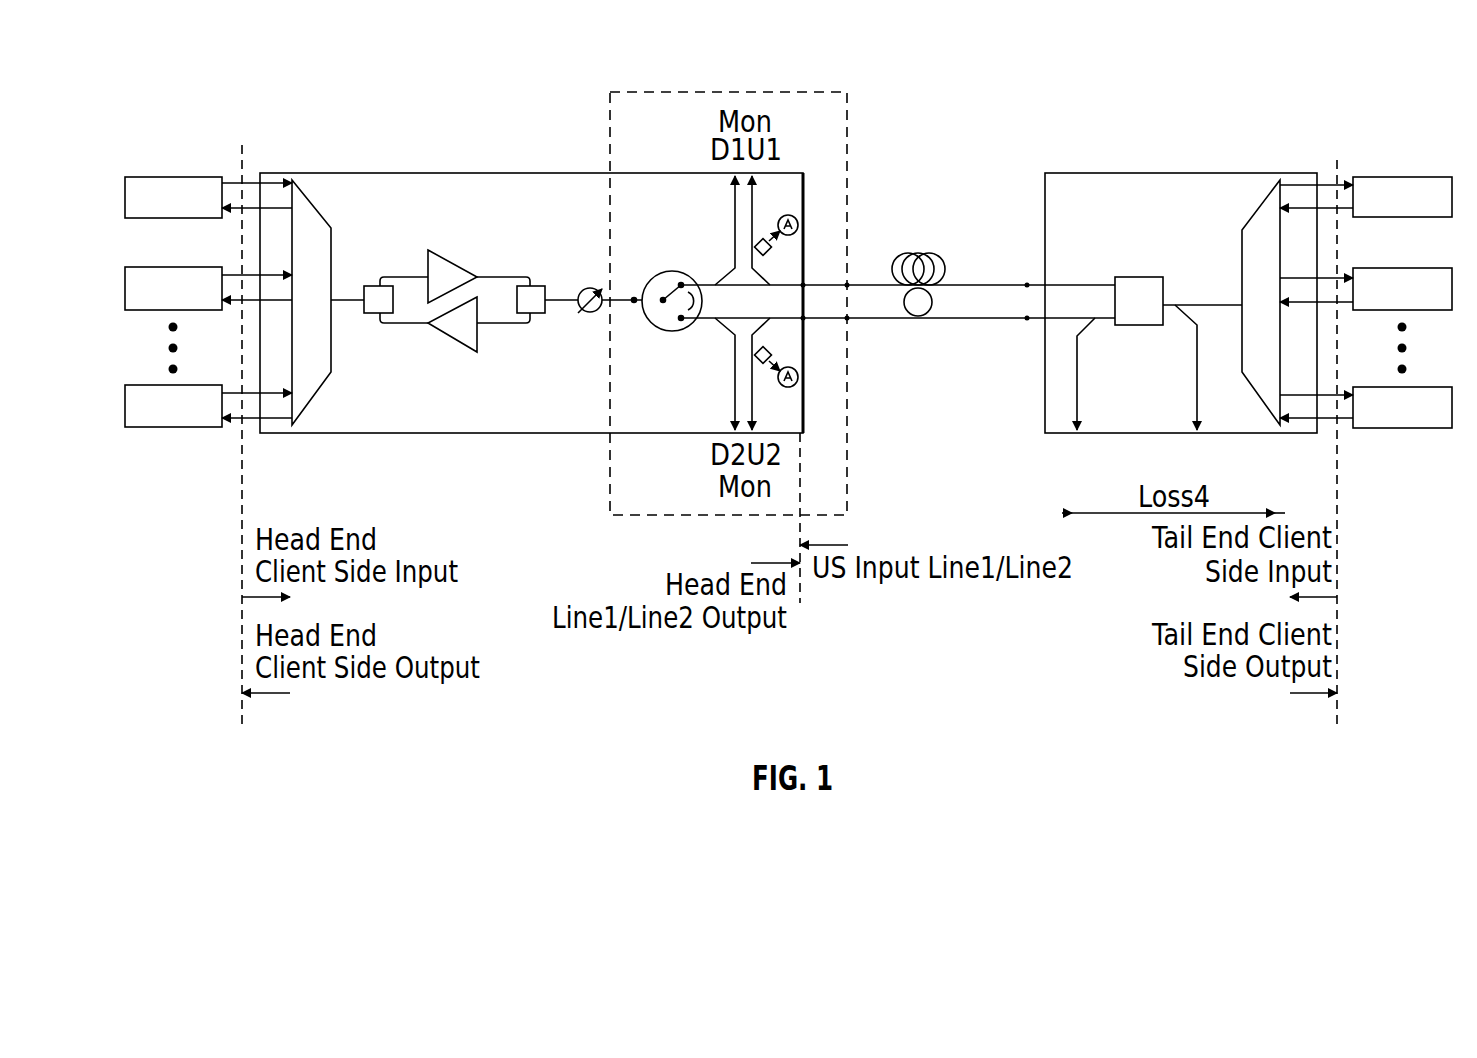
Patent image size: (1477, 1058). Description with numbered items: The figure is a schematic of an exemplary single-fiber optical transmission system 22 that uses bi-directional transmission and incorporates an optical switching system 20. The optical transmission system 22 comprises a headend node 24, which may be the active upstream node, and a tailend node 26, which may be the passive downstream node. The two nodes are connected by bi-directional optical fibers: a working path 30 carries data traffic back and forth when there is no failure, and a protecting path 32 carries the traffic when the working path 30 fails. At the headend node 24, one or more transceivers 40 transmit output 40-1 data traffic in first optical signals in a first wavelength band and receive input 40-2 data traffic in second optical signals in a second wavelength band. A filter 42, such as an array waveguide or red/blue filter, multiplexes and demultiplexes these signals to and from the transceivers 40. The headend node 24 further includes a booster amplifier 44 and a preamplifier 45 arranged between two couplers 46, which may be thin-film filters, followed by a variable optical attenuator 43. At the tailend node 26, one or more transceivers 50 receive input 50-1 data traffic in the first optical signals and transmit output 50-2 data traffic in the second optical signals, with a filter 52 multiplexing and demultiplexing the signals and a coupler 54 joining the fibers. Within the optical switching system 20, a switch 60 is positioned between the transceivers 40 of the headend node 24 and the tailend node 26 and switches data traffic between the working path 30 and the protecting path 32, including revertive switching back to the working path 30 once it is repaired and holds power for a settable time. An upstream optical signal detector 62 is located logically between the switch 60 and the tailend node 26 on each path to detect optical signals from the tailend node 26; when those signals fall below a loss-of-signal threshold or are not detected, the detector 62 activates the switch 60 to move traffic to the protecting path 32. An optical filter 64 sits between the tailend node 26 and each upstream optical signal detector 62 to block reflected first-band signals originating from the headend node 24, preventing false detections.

The optical switching system 20 is at (662, 92).
The optical transmission system 22 is at (968, 133).
The headend node 24 is at (320, 173).
The tailend node 26 is at (1145, 173).
The working path 30 is at (1027, 283).
The protecting path 32 is at (1027, 320).
The transceiver 40 is at (157, 177).
The output 40-1 is at (237, 183).
The input 40-2 is at (245, 210).
The filter 42 is at (328, 302).
The variable optical attenuator 43 is at (590, 287).
The booster amplifier 44 is at (428, 252).
The preamplifier 45 is at (478, 345).
The coupler 46 is at (372, 313).
The transceiver 50 is at (1412, 177).
The input 50-1 is at (1325, 185).
The output 50-2 is at (1305, 208).
The filter 52 is at (1261, 302).
The coupler 54 is at (1125, 277).
The switch 60 is at (668, 272).
The upstream optical signal detector 62 is at (800, 225).
The optical filter 64 is at (770, 240).